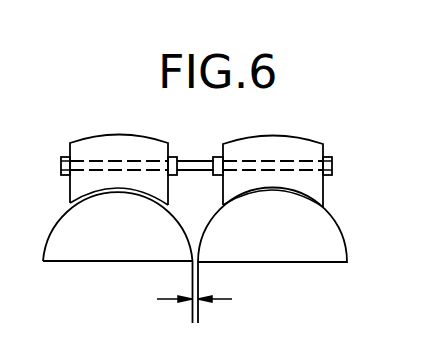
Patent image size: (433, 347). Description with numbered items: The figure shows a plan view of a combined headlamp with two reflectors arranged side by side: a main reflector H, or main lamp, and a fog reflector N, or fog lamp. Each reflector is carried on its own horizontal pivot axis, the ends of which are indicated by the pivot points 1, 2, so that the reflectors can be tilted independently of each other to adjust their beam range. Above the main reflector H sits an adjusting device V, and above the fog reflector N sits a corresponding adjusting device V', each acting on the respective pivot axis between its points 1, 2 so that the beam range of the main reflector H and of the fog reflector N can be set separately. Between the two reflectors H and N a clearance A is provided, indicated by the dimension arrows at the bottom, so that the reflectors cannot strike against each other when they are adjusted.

The pivot axis point 1 is at (134, 180).
The pivot axis point 2 is at (259, 180).
The adjusting device V is at (116, 159).
The adjusting device V' is at (277, 161).
The main reflector H is at (118, 257).
The fog reflector N is at (272, 256).
The clearance A is at (194, 287).